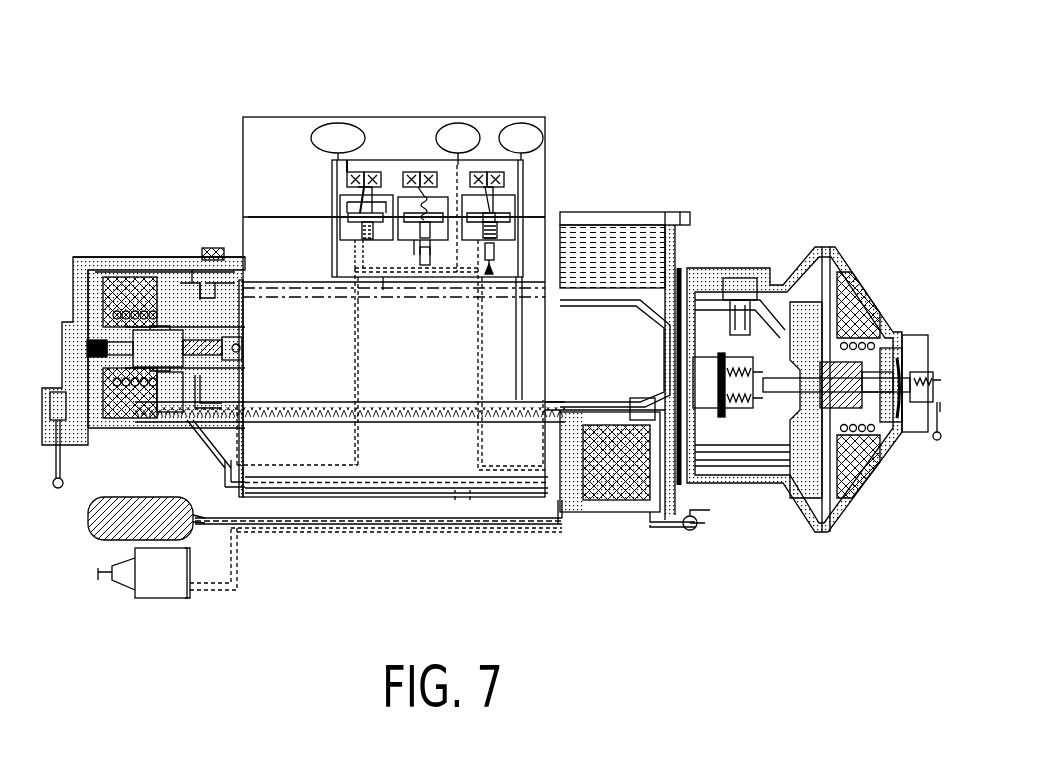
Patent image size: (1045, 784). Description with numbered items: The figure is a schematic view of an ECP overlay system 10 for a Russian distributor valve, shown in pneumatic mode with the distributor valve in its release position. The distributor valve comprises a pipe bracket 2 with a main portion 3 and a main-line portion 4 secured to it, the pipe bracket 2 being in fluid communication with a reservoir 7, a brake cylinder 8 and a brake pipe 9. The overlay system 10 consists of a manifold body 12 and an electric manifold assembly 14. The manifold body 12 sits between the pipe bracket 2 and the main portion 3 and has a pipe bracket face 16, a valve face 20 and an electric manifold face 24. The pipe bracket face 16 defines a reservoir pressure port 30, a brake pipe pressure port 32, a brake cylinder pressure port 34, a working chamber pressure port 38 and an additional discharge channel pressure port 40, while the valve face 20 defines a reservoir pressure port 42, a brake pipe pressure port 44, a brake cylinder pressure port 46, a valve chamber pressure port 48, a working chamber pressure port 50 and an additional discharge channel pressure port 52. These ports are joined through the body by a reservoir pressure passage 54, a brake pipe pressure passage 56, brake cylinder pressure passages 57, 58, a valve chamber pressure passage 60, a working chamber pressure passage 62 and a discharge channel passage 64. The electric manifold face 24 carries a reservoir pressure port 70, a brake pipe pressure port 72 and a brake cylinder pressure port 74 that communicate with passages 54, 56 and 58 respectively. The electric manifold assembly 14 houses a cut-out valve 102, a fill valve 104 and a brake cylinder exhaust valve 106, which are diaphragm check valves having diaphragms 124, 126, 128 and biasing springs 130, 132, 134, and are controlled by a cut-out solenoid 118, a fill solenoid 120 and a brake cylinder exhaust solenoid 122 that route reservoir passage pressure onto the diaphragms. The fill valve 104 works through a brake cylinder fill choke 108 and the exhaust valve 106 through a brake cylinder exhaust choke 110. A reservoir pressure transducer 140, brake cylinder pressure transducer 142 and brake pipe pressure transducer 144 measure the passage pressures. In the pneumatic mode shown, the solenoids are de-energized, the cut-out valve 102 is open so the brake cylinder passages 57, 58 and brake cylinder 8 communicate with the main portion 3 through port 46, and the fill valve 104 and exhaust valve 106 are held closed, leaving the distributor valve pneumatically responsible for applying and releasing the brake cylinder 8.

The ECP overlay system 10 is at (563, 92).
The pipe bracket 2 is at (612, 505).
The main portion 3 is at (70, 330).
The main-line portion 4 is at (915, 340).
The reservoir 7 is at (105, 515).
The brake cylinder 8 is at (125, 568).
The brake pipe 9 is at (702, 530).
The manifold body 12 is at (400, 480).
The electric manifold assembly 14 is at (248, 140).
The pipe bracket face 16 is at (560, 332).
The valve face 20 is at (212, 248).
The electric manifold face 24 is at (254, 215).
The reservoir pressure port 30 is at (530, 487).
The brake pipe pressure port 32 is at (547, 402).
The brake cylinder pressure port 34 is at (530, 470).
The working chamber pressure port 38 is at (565, 262).
The additional discharge channel pressure port 40 is at (542, 298).
The reservoir pressure port 42 is at (242, 484).
The brake pipe pressure port 44 is at (228, 420).
The brake cylinder pressure port 46 is at (255, 470).
The valve chamber pressure port 48 is at (233, 455).
The working chamber pressure port 50 is at (245, 286).
The additional discharge channel pressure port 52 is at (265, 297).
The reservoir pressure passage 54 is at (365, 482).
The brake pipe pressure passage 56 is at (413, 402).
The brake cylinder pressure passage 57 is at (342, 470).
The brake cylinder pressure passage 58 is at (455, 490).
The valve chamber pressure passage 60 is at (467, 410).
The working chamber pressure passage 62 is at (437, 282).
The discharge channel passage 64 is at (385, 282).
The reservoir pressure port 70 is at (338, 218).
The brake pipe pressure port 72 is at (540, 182).
The brake cylinder pressure port 74 is at (460, 282).
The cut-out valve 102 is at (335, 195).
The fill valve 104 is at (386, 170).
The brake cylinder exhaust valve 106 is at (540, 152).
The brake cylinder fill choke 108 is at (407, 282).
The brake cylinder exhaust choke 110 is at (540, 248).
The cut-out solenoid 118 is at (370, 170).
The fill solenoid 120 is at (420, 168).
The brake cylinder exhaust solenoid 122 is at (488, 170).
The diaphragm 124 is at (342, 214).
The diaphragm 126 is at (434, 170).
The diaphragm 128 is at (545, 212).
The spring 130 is at (360, 230).
The spring 132 is at (366, 305).
The spring 134 is at (545, 228).
The reservoir pressure transducer 140 is at (340, 126).
The brake cylinder pressure transducer 142 is at (452, 170).
The brake pipe pressure transducer 144 is at (512, 170).